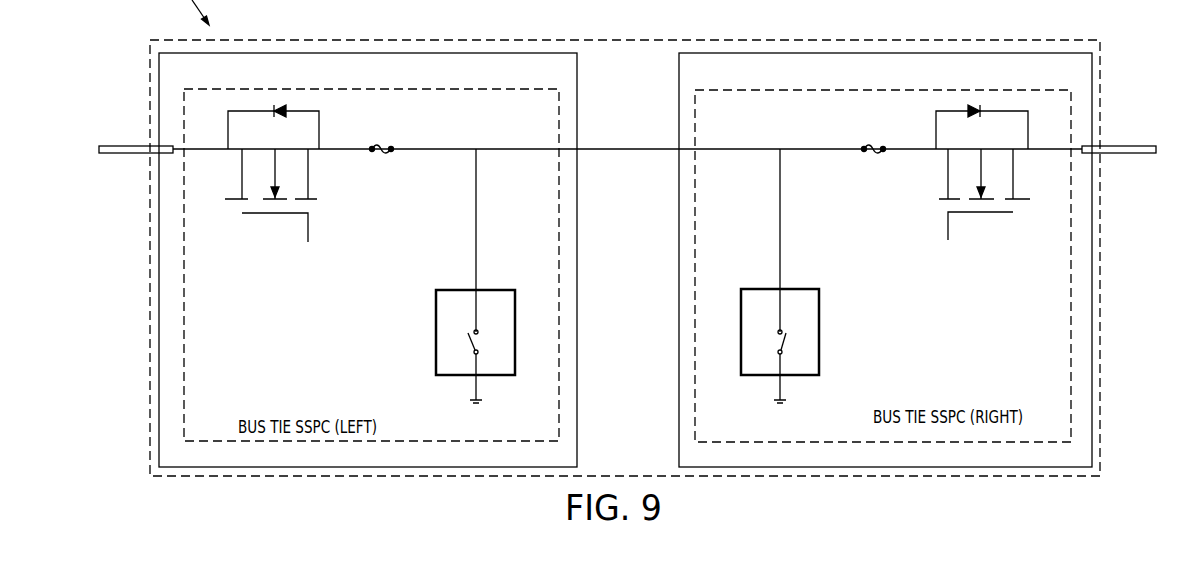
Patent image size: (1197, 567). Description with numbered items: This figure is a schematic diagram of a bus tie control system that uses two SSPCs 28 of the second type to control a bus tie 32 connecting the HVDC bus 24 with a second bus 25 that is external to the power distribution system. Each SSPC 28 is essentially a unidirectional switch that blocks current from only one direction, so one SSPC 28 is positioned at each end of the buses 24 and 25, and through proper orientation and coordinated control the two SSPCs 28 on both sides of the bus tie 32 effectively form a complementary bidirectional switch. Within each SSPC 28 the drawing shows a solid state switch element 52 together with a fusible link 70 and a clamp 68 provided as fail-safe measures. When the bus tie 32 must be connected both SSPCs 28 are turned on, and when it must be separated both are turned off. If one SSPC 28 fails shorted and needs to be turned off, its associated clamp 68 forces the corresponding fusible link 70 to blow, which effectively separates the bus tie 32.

The HVDC bus 24 is at (113, 145).
The second bus 25 is at (1150, 145).
The type 2 SSPC 28 is at (362, 53).
The bus tie 32 is at (632, 151).
The solid state switch (MOSFET) of bus tie SSPC 52 is at (248, 111).
The clamp 68 is at (436, 327).
The fusible link 70 is at (379, 151).